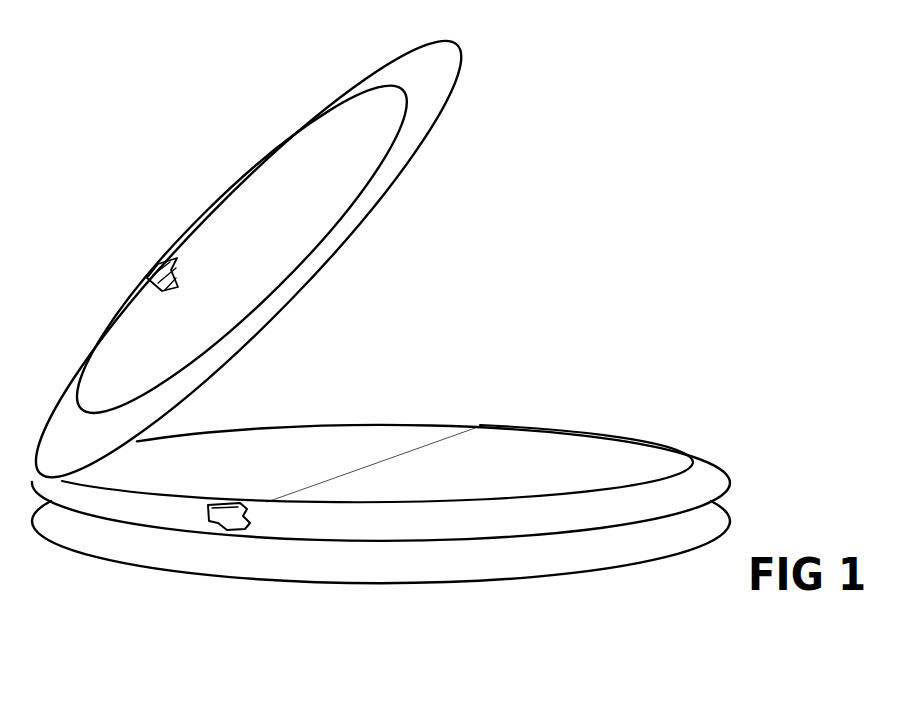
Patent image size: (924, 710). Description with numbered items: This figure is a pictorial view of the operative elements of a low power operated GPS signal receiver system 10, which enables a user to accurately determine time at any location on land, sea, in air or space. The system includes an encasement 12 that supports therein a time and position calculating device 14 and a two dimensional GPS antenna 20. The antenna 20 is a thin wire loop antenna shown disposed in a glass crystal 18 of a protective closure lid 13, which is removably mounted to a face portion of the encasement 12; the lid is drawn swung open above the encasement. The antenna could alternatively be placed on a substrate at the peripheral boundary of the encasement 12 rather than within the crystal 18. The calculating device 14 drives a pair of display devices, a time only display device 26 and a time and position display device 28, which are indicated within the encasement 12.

The GPS signal receiver system 10 is at (760, 243).
The encasement 12 is at (355, 555).
The protective closure lid 13 is at (420, 77).
The time and position calculating device 14 is at (228, 505).
The glass crystal 18 is at (245, 187).
The two dimensional GPS antenna 20 is at (146, 278).
The time only display device 26 is at (330, 453).
The time and position display device 28 is at (537, 450).